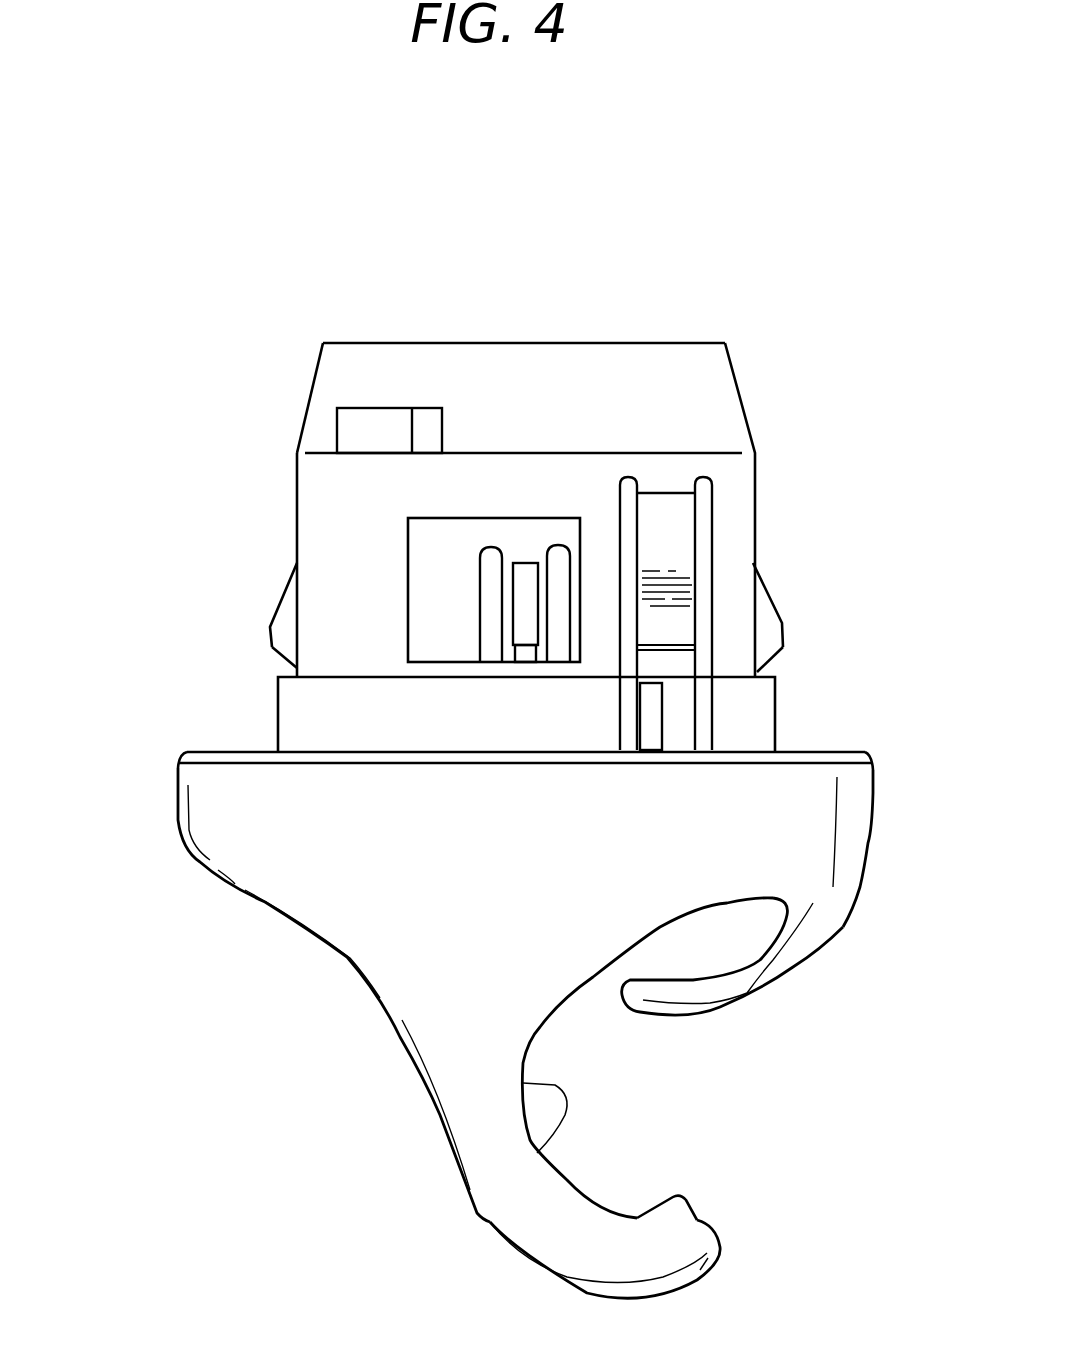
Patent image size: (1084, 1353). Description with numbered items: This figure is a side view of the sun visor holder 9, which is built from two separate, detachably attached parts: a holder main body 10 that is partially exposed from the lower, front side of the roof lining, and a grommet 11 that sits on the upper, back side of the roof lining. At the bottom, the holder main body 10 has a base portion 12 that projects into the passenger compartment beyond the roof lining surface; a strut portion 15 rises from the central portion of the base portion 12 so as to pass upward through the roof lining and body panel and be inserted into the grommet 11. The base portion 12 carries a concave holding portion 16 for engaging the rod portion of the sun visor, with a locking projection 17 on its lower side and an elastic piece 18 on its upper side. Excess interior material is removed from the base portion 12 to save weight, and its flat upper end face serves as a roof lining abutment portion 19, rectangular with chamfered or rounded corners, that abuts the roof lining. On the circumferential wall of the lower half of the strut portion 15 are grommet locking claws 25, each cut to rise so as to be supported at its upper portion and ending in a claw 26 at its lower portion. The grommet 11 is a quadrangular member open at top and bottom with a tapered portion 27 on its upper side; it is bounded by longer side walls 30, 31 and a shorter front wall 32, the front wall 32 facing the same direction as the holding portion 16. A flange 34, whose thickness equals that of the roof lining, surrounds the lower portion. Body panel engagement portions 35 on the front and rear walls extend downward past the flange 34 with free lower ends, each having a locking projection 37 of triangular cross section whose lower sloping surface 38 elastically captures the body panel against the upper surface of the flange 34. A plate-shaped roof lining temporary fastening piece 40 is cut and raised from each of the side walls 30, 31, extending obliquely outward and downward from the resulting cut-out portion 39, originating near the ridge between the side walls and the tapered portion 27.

The sun visor holder 9 is at (525, 268).
The holder main body 10 is at (257, 905).
The grommet 11 is at (360, 335).
The base portion 12 is at (220, 808).
The strut portion 15 is at (408, 618).
The holding portion 16 is at (537, 1153).
The locking projection 17 is at (697, 1208).
The elastic piece 18 is at (723, 990).
The roof lining abutment portion 19 is at (853, 752).
The grommet locking claw 25 is at (524, 556).
The claw 26 is at (528, 660).
The tapered portion 27 is at (667, 363).
The side wall 30 is at (297, 517).
The side wall 31 is at (295, 484).
The front wall 32 is at (755, 482).
The flange 34 is at (300, 713).
The body panel engagement portion 35 is at (283, 577).
The locking projection 37 is at (280, 602).
The lower sloping surface 38 is at (282, 657).
The cut-out portion 39 is at (632, 485).
The roof lining temporary fastening piece 40 is at (673, 557).